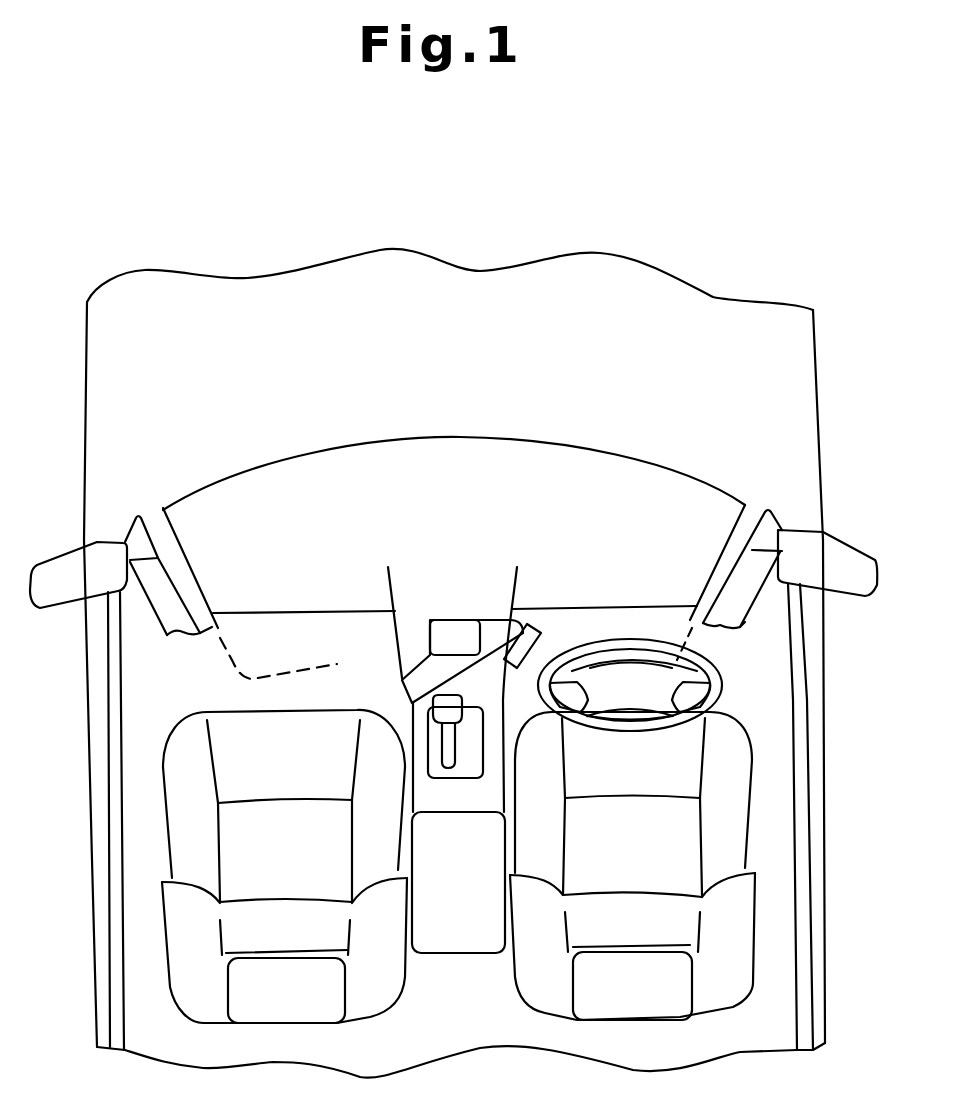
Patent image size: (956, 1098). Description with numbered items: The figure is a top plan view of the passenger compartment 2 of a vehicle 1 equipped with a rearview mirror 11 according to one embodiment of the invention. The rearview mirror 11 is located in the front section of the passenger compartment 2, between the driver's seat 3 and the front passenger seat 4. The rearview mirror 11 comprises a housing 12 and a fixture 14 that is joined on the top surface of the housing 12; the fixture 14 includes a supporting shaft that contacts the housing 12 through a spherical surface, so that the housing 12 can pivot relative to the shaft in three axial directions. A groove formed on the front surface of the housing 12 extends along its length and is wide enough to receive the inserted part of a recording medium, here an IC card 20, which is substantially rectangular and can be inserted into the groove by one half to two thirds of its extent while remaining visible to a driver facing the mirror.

The vehicle 1 is at (786, 270).
The passenger compartment 2 is at (468, 1005).
The driver's seat 3 is at (737, 970).
The front passenger seat 4 is at (178, 978).
The rearview mirror 11 is at (455, 617).
The housing 12 is at (425, 660).
The fixture 14 is at (445, 627).
The IC card 20 is at (538, 640).